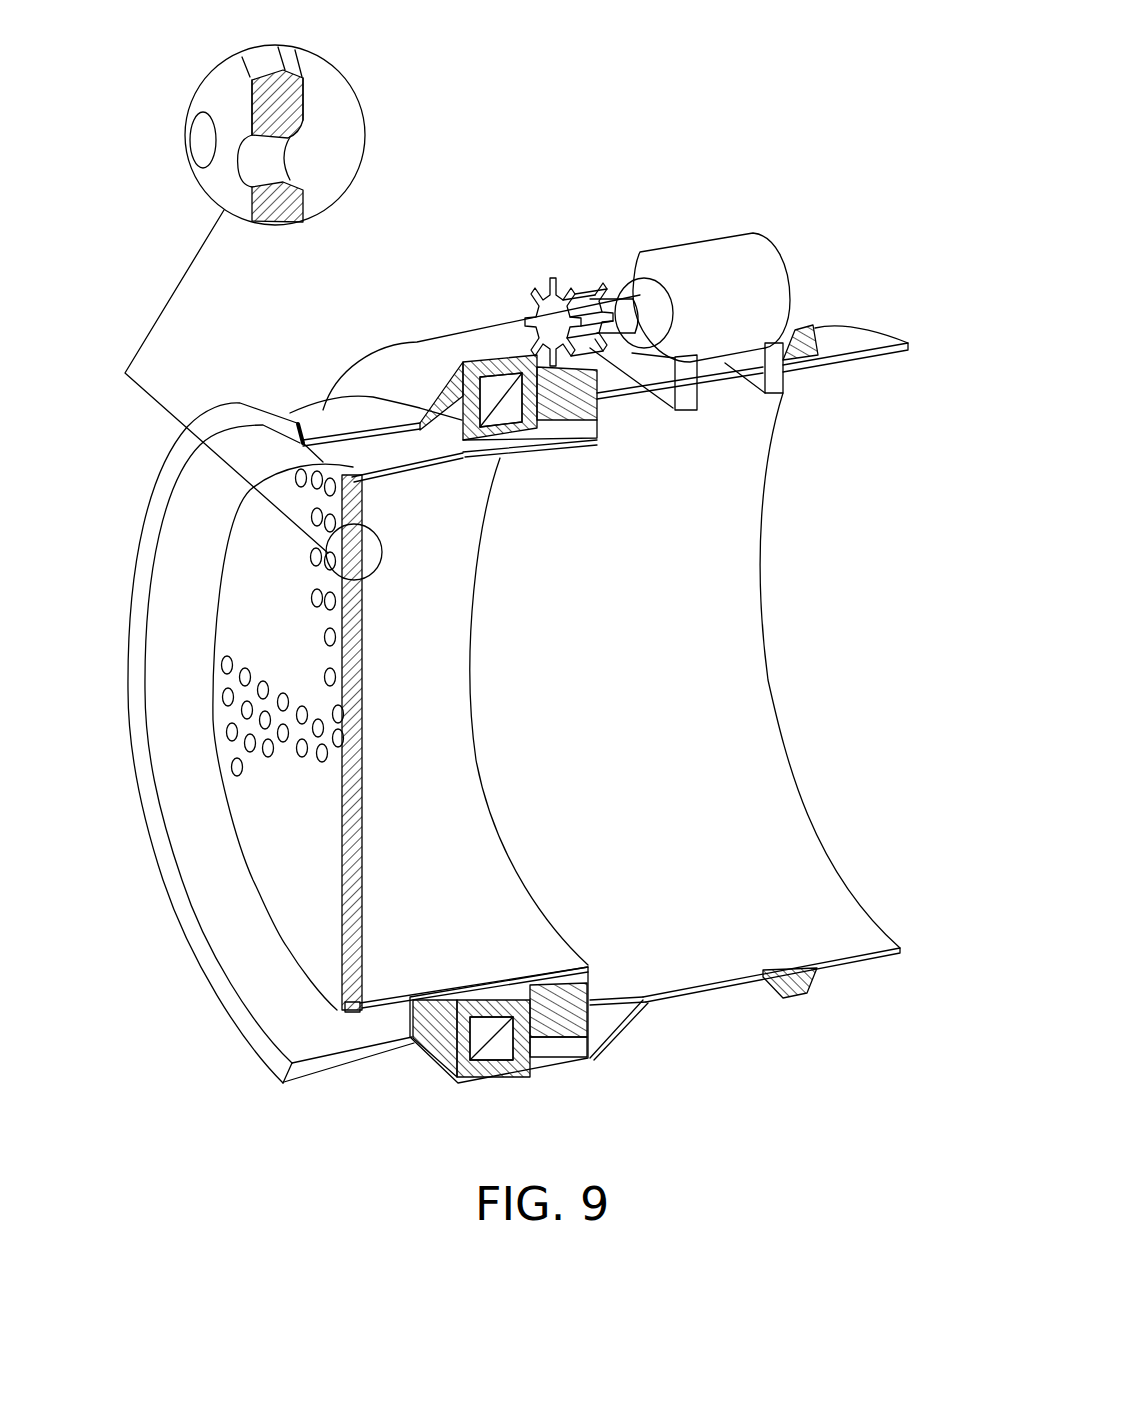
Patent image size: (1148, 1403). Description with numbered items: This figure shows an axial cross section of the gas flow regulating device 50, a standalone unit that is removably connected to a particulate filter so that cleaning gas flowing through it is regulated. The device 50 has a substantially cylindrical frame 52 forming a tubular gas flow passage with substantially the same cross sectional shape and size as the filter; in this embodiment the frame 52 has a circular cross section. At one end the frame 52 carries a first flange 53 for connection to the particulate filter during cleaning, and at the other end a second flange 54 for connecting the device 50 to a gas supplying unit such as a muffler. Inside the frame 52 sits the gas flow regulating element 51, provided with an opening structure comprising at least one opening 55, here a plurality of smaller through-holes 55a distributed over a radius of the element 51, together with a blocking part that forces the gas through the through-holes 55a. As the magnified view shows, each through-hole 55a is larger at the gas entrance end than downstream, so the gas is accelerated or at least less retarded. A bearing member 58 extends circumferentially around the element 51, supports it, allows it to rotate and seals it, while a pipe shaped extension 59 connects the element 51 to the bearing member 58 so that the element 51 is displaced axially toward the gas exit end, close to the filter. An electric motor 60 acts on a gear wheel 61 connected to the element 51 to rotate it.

The gas flow regulating device 50 is at (792, 78).
The gas flow regulating element 51 is at (300, 920).
The frame 52 is at (722, 660).
The first flange 53 is at (270, 1062).
The second flange 54 is at (800, 992).
The opening 55 is at (232, 770).
The smaller through-holes 55a is at (297, 158).
The bearing member 58 is at (495, 1052).
The pipe shaped extension 59 is at (402, 945).
The electric motor 60 is at (712, 272).
The gear wheel 61 is at (566, 1052).